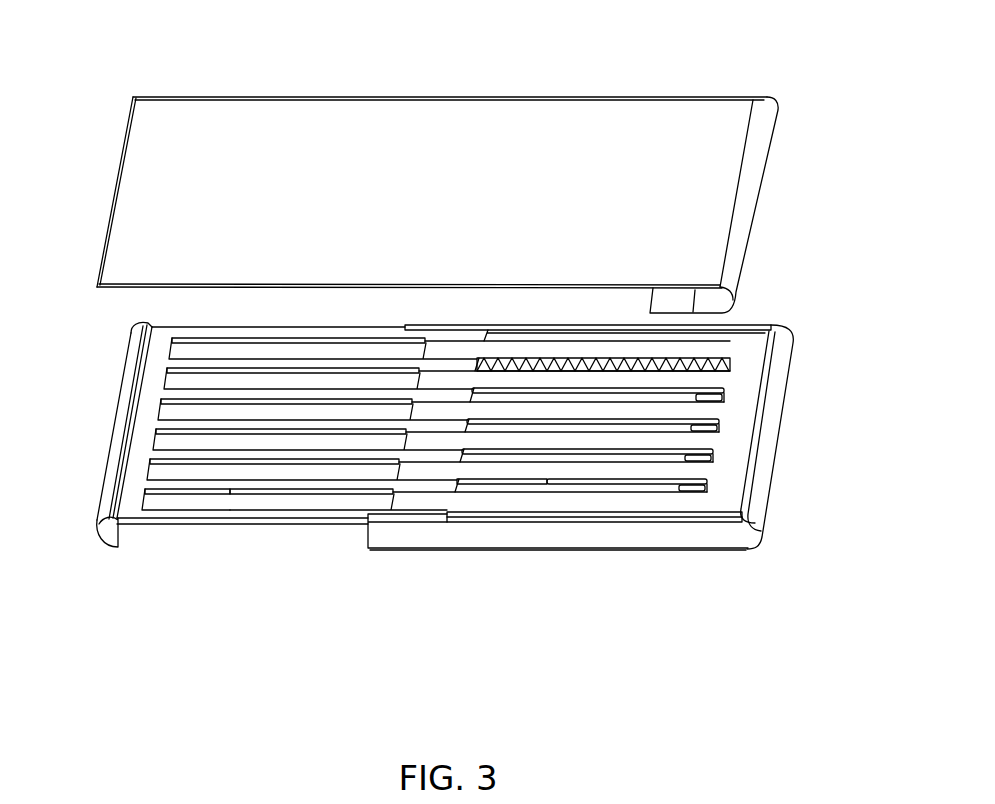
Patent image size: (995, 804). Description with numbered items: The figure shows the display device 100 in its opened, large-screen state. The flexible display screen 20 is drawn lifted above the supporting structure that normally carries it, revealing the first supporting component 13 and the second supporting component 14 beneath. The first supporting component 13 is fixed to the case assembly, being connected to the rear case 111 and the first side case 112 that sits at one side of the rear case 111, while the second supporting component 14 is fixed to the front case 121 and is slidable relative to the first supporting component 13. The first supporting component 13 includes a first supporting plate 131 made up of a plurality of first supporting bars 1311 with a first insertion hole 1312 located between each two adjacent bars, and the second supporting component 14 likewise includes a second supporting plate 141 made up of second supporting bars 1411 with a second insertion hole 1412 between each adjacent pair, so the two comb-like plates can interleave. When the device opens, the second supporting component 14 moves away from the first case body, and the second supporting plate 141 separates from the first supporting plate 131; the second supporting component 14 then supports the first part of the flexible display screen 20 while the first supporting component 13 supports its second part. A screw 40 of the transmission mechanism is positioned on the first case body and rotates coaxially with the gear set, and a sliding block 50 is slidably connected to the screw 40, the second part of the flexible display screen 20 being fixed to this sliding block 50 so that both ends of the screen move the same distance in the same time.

The display device 100 is at (138, 66).
The flexible display screen 20 is at (720, 185).
The screw 40 is at (690, 366).
The first supporting component 13 is at (624, 471).
The second supporting component 14 is at (382, 483).
The rear case 111 is at (758, 486).
The first side case 112 is at (407, 530).
The front case 121 is at (105, 532).
The second supporting plate 141 is at (424, 564).
The second supporting bar 1411 is at (178, 513).
The second insertion hole 1412 is at (247, 504).
The first supporting plate 131 is at (581, 563).
The first supporting bar 1311 is at (498, 500).
The first insertion hole 1312 is at (590, 490).
The sliding block 50 is at (687, 487).